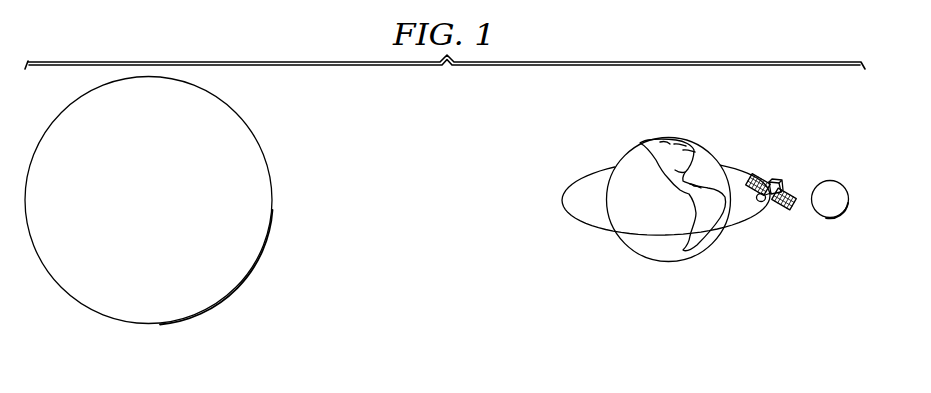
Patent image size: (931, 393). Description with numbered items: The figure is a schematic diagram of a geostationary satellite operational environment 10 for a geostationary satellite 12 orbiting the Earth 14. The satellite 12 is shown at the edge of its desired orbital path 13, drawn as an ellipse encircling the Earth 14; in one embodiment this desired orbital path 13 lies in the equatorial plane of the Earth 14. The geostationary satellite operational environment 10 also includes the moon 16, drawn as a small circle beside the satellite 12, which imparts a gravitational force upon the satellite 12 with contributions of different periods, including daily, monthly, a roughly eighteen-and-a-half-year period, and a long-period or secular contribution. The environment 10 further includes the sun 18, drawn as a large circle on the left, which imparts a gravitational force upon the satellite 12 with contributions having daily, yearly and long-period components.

The geostationary satellite operational environment 10 is at (617, 323).
The geostationary satellite 12 is at (797, 166).
The desired orbital path 13 is at (590, 175).
The Earth 14 is at (701, 146).
The moon 16 is at (828, 218).
The sun 18 is at (160, 232).